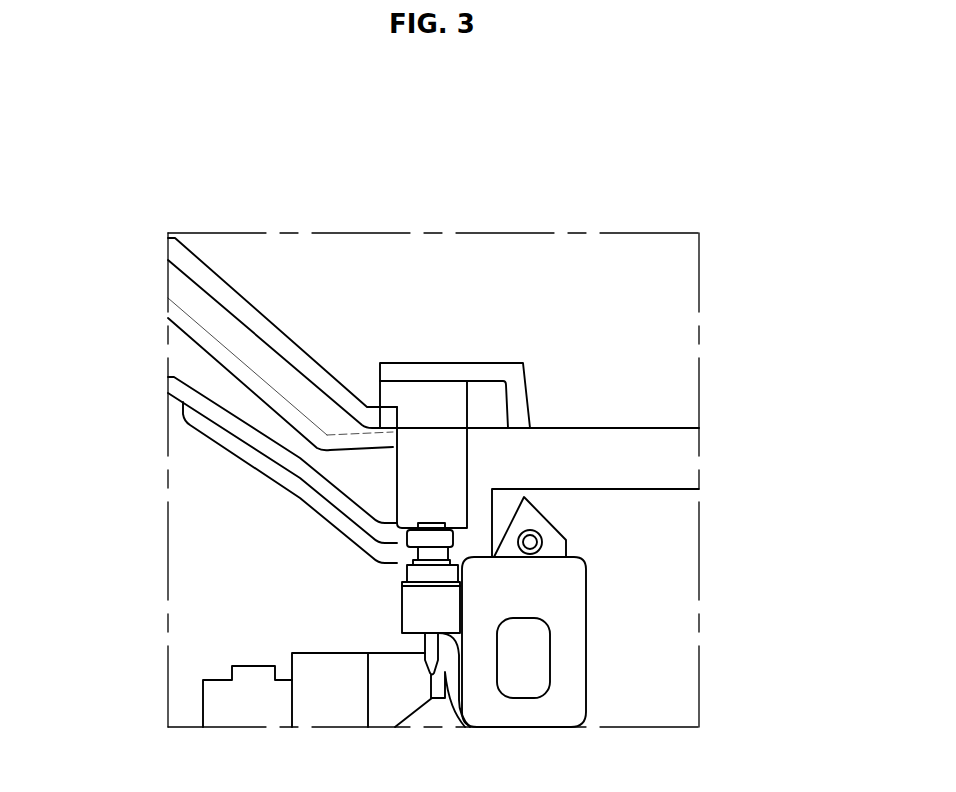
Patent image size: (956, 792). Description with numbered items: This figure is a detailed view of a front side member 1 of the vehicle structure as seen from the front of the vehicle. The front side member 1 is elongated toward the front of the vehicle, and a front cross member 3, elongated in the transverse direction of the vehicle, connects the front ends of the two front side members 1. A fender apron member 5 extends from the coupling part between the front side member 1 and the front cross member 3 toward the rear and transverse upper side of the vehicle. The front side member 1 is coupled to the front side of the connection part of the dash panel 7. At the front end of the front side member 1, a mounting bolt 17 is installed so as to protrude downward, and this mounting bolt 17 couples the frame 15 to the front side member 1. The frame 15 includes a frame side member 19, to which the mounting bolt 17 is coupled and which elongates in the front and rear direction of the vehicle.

The front side member 1 is at (432, 475).
The front cross member 3 is at (668, 463).
The fender apron member 5 is at (253, 349).
The dash panel 7 is at (667, 283).
The frame 15 is at (591, 680).
The mounting bolt 17 is at (433, 645).
The frame side member 19 is at (530, 592).